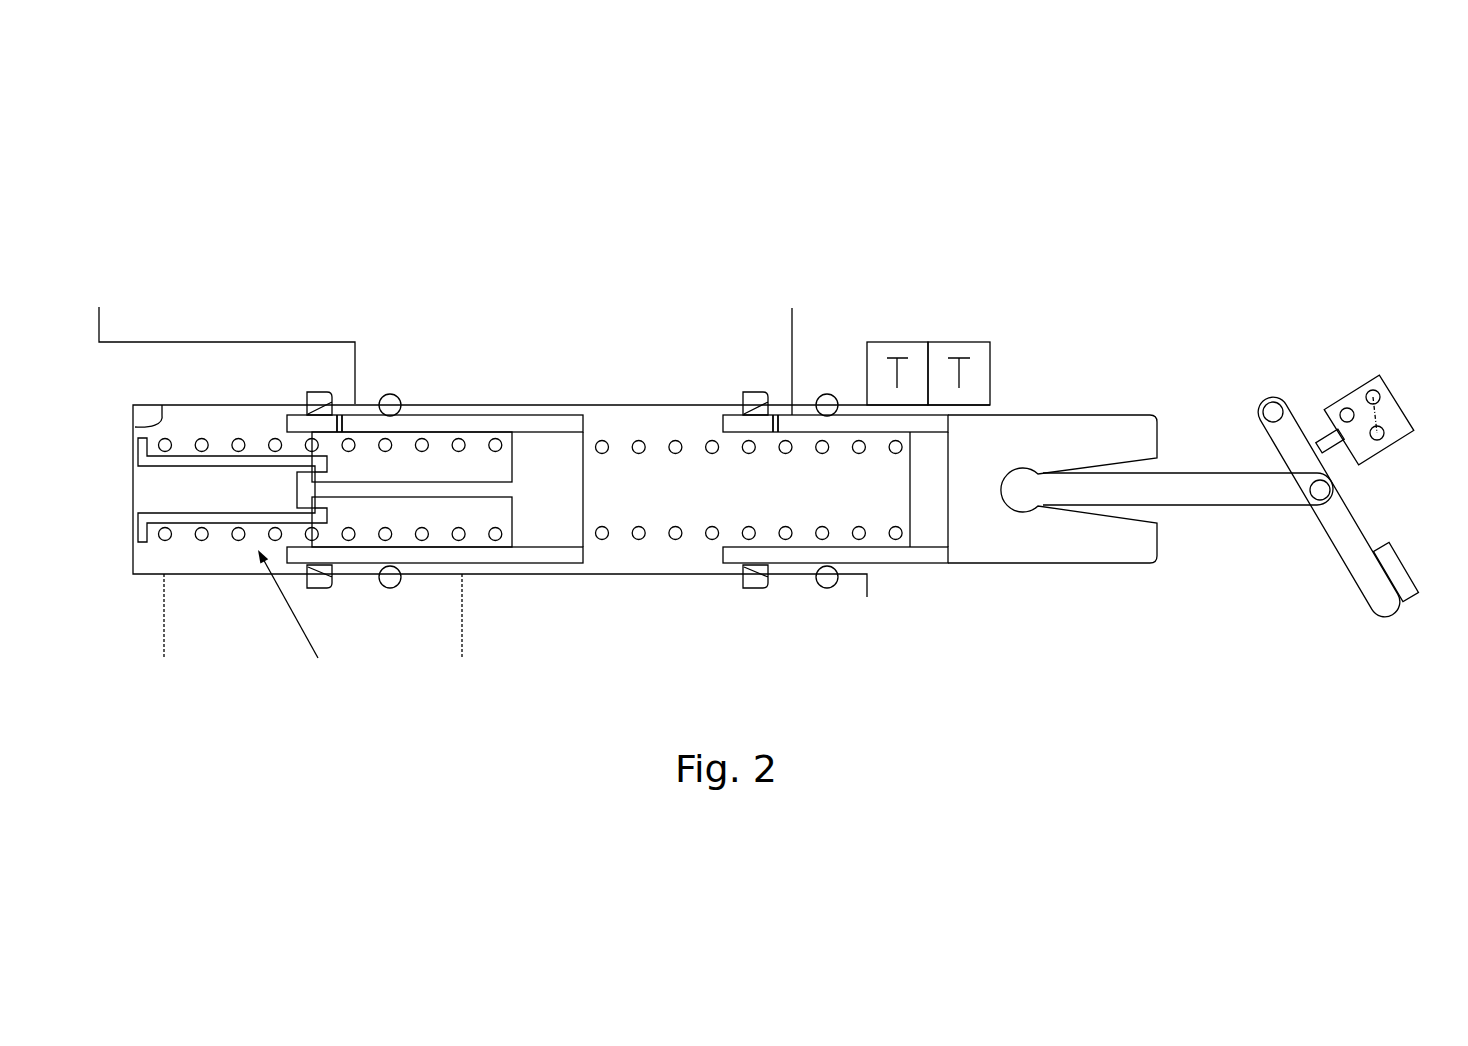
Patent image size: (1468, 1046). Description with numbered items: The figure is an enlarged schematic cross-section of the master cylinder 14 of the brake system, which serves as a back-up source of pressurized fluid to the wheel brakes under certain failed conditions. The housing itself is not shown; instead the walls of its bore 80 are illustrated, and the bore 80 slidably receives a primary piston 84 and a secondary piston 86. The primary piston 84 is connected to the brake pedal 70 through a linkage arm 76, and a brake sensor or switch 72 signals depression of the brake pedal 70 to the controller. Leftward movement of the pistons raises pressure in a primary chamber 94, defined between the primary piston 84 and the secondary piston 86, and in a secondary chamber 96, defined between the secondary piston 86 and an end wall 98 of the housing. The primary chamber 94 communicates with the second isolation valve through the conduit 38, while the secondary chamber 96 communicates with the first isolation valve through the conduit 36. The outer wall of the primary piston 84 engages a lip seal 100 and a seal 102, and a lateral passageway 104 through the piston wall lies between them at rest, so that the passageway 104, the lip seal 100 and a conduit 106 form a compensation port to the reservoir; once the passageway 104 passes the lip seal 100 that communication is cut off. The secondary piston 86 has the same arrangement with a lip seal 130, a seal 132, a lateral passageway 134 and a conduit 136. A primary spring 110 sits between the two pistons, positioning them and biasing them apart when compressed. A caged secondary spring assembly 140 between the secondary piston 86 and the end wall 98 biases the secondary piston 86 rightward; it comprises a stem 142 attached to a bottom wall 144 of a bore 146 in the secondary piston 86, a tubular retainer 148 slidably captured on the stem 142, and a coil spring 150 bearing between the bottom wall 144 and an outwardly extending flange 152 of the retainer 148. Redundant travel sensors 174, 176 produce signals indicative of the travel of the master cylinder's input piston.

The master cylinder 14 is at (1256, 173).
The conduit 36 is at (165, 635).
The conduit 38 is at (462, 630).
The brake pedal 70 is at (1399, 563).
The brake sensor or switch 72 is at (1400, 413).
The linkage arm 76 is at (1173, 483).
The bore 80 is at (600, 574).
The primary piston 84 is at (997, 540).
The secondary piston 86 is at (557, 535).
The primary chamber 94 is at (658, 557).
The secondary chamber 96 is at (207, 558).
The end wall 98 is at (162, 415).
The lip seal 100 is at (752, 397).
The seal 102 is at (828, 393).
The lateral passageway 104 is at (778, 417).
The conduit 106 is at (790, 330).
The primary spring 110 is at (642, 445).
The lip seal 130 is at (325, 392).
The seal 132 is at (402, 398).
The lateral passageway 134 is at (345, 418).
The conduit 136 is at (357, 363).
The secondary spring assembly 140 is at (304, 616).
The stem 142 is at (372, 490).
The bottom wall 144 is at (510, 450).
The bore 146 is at (369, 548).
The tubular retainer 148 is at (183, 462).
The coil spring 150 is at (460, 538).
The outwardly extending flange 152 is at (145, 542).
The travel sensor 174 is at (898, 343).
The travel sensor 176 is at (968, 343).